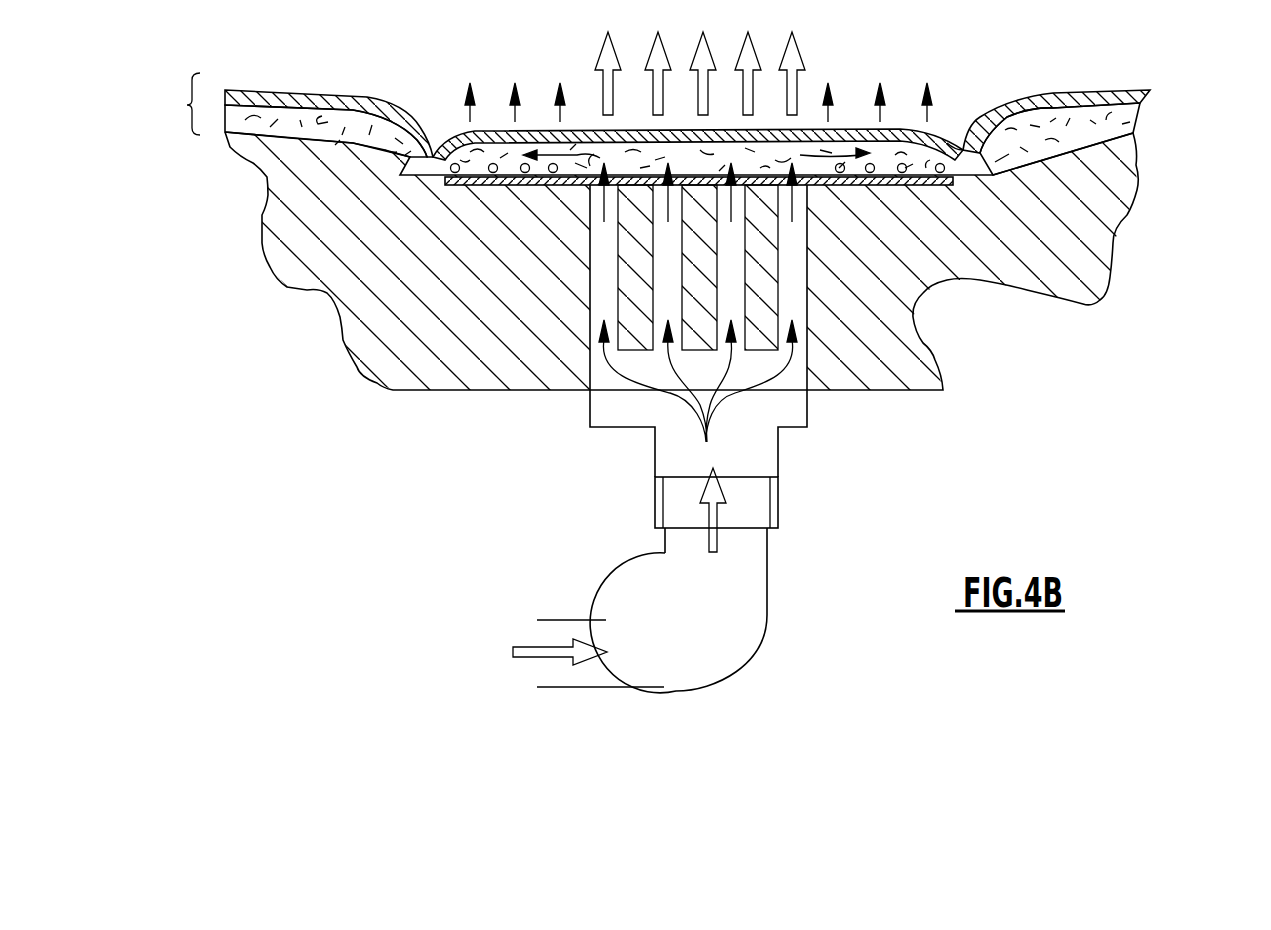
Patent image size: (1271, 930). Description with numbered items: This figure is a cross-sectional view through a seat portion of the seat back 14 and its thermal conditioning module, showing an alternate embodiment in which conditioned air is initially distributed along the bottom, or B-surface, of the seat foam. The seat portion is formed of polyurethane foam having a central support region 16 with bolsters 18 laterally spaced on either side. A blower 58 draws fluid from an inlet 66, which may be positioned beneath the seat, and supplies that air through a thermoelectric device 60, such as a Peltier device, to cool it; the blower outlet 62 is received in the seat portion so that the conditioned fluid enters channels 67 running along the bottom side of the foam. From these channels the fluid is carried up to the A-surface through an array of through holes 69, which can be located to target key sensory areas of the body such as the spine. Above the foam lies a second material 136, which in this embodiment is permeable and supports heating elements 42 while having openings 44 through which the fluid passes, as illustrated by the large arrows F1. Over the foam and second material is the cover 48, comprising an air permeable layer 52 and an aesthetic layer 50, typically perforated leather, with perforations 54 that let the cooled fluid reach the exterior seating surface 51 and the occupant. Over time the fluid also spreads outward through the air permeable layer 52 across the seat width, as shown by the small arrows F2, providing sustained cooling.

The seat back 14 is at (685, 376).
The central support region 16 is at (923, 263).
The bolsters 18 is at (1088, 160).
The heating elements 42 is at (500, 167).
The openings 44 is at (699, 118).
The cover 48 is at (187, 97).
The aesthetic layer 50 is at (283, 97).
The exterior seating surface 51 is at (948, 132).
The air permeable layer 52 is at (292, 125).
The perforations 54 is at (468, 132).
The blower 58 is at (727, 652).
The thermoelectric device 60 is at (677, 515).
The outlet 62 is at (768, 545).
The inlet 66 is at (543, 687).
The channels 67 is at (807, 383).
The through holes 69 is at (738, 287).
The second material 136 is at (890, 185).
The large arrows F1 is at (613, 87).
The small arrows F2 is at (560, 110).